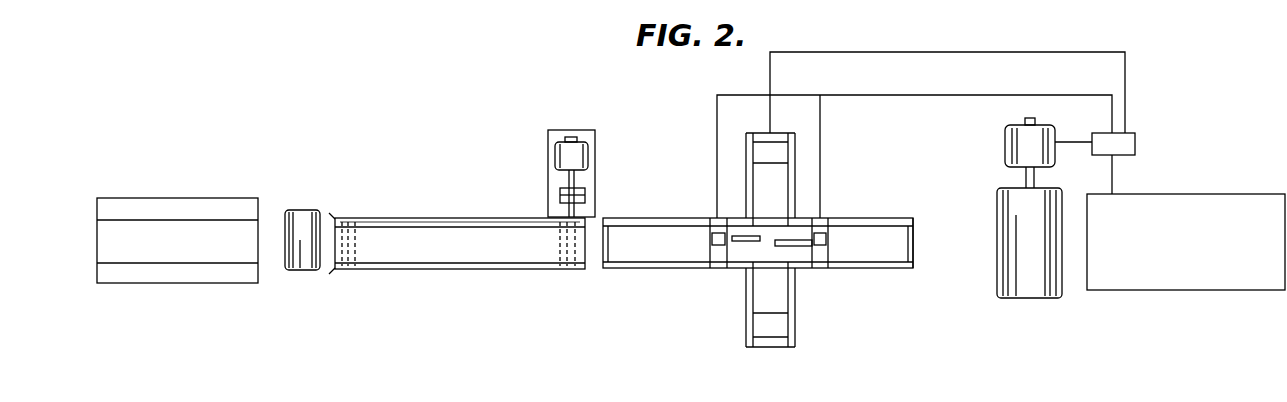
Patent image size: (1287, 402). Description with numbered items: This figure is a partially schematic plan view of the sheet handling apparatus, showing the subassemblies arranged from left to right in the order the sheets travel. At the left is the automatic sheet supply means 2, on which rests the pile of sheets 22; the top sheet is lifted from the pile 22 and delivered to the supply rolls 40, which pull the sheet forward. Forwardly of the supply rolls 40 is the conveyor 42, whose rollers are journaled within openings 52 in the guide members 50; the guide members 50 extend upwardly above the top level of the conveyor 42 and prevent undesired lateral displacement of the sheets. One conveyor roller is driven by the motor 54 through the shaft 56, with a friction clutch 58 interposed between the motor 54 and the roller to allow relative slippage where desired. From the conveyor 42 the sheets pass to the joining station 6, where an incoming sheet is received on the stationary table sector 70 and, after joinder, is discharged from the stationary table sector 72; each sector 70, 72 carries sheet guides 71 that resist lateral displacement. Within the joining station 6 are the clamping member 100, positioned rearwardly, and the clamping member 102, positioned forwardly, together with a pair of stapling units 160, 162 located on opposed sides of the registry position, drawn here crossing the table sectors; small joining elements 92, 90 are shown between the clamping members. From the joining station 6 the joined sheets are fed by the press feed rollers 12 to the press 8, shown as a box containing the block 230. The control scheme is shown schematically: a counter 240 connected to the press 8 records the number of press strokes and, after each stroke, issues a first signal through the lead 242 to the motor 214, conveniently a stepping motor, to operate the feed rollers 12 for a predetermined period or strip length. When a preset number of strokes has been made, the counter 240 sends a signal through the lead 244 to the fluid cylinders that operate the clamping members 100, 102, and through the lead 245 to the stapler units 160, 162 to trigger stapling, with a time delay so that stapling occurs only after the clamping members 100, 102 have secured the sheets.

The automatic sheet supply means 2 is at (170, 196).
The pile of sheets 22 is at (205, 265).
The supply rolls 40 is at (300, 207).
The conveyor 42 is at (480, 216).
The guide members 50 is at (410, 218).
The openings 52 is at (345, 222).
The motor 54 is at (590, 157).
The shaft 56 is at (590, 212).
The friction clutch 58 is at (592, 190).
The joining station 6 is at (706, 201).
The stationary table sector 70 is at (680, 254).
The sheet guides 71 is at (665, 217).
The stationary table sector 72 is at (898, 268).
The clamping member 100 is at (713, 266).
The clamping member 102 is at (819, 266).
The first knife 92 is at (748, 236).
The second knife 90 is at (781, 247).
The stapling unit 160 is at (773, 337).
The stapling unit 162 is at (764, 142).
The lead 244 is at (717, 135).
The lead 245 is at (963, 52).
The counter 240 is at (1135, 146).
The lead 242 is at (1070, 142).
The motor 214 is at (1005, 146).
The press feed rollers 12 is at (1031, 298).
The press 8 is at (1219, 192).
The control circuit 230 is at (1180, 248).